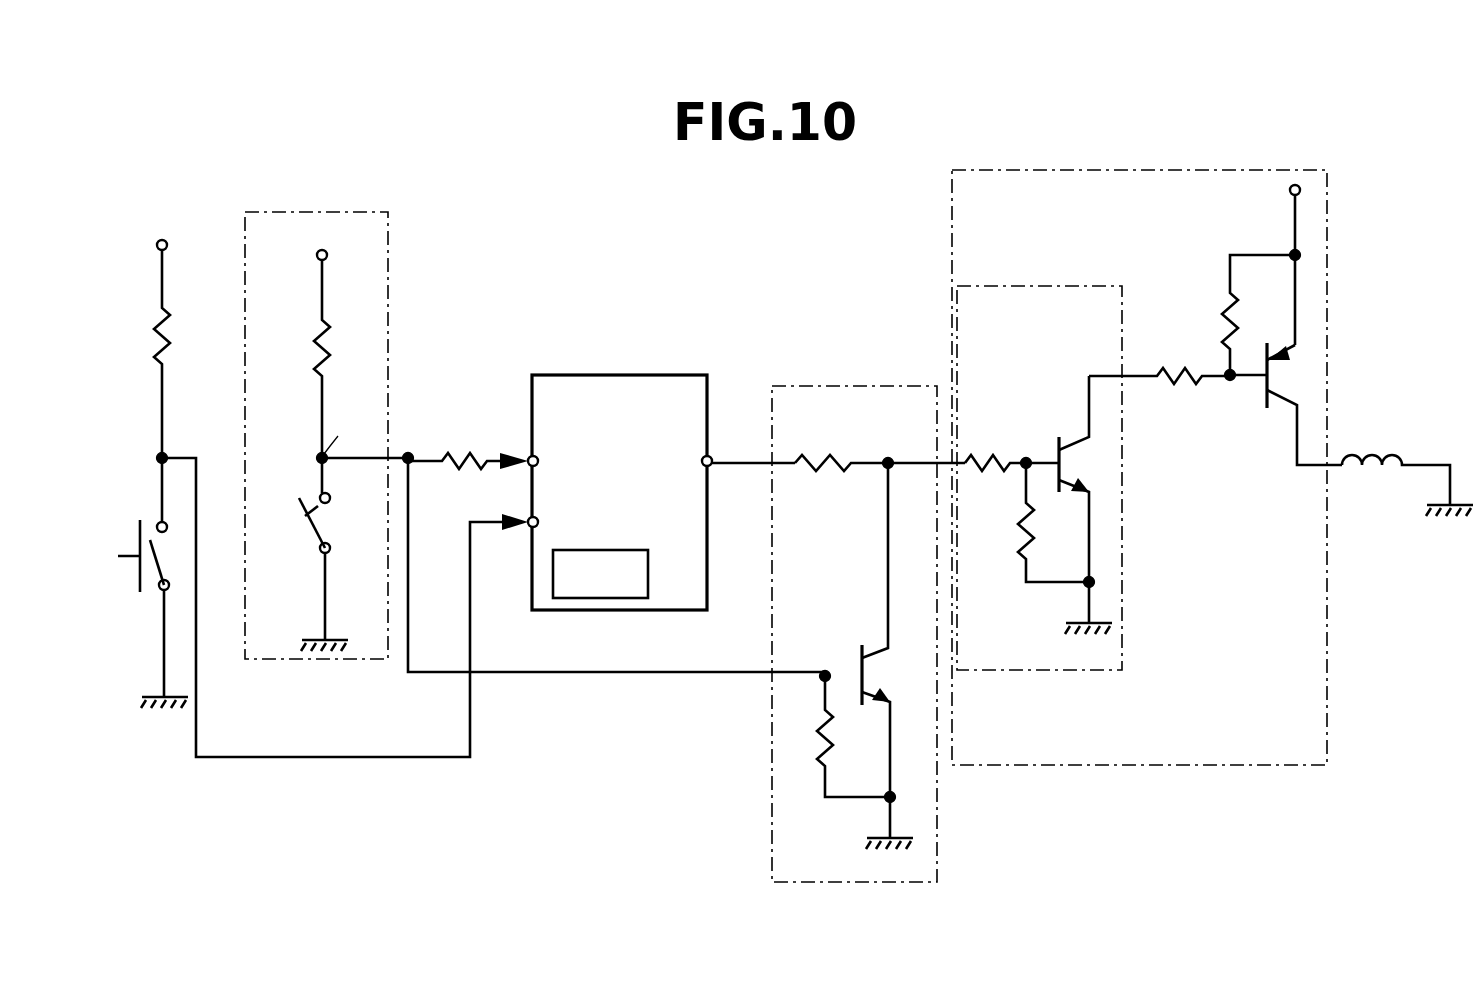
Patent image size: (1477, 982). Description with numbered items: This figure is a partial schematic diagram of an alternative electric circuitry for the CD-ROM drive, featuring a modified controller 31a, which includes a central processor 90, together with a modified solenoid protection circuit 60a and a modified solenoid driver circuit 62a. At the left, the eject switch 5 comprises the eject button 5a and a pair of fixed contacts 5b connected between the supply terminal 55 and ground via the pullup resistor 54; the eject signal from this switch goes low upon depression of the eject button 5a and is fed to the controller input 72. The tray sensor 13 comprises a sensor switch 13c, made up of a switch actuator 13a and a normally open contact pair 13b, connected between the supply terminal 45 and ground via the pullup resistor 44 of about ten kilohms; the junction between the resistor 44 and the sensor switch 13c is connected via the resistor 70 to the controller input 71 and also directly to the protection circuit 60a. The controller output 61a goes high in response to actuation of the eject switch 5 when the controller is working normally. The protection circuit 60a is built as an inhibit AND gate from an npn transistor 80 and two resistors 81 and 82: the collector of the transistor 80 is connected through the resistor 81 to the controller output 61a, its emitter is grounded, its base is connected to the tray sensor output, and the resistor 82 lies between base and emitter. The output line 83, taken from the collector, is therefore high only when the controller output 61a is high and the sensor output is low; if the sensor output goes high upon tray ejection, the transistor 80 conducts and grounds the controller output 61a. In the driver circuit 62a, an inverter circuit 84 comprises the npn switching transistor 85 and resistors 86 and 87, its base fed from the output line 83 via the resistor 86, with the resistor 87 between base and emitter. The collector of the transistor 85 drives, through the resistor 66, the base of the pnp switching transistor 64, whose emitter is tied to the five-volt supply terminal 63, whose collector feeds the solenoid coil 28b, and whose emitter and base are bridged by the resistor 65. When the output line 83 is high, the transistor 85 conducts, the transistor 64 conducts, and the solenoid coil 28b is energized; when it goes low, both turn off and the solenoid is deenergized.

The eject switch 5 is at (146, 565).
The eject button 5a is at (136, 526).
The fixed contacts 5b is at (163, 590).
The tray sensor 13 is at (390, 305).
The switch actuator 13a is at (302, 525).
The normally open contact pair 13b is at (327, 502).
The sensor switch 13c is at (284, 476).
The solenoid coil 28b is at (1380, 452).
The modified controller 31a is at (618, 375).
The pullup resistor 44 is at (310, 343).
The supply terminal 45 is at (316, 256).
The pullup resistor 54 is at (174, 342).
The supply terminal 55 is at (162, 238).
The modified solenoid protection circuit 60a is at (823, 386).
The controller output 61a is at (708, 468).
The modified solenoid driver circuit 62a is at (1328, 280).
The supply terminal 63 is at (1286, 202).
The switching transistor 64 is at (1266, 390).
The resistor 65 is at (1216, 326).
The resistor 66 is at (1188, 382).
The resistor 70 is at (464, 450).
The controller input 71 is at (528, 454).
The controller input 72 is at (528, 531).
The npn transistor 80 is at (858, 672).
The resistor 81 is at (822, 448).
The resistor 82 is at (830, 750).
The output line 83 is at (946, 462).
The inverter circuit 84 is at (1108, 670).
The switching transistor 85 is at (1050, 456).
The resistor 86 is at (982, 458).
The resistor 87 is at (1020, 530).
The central processor 90 is at (650, 578).